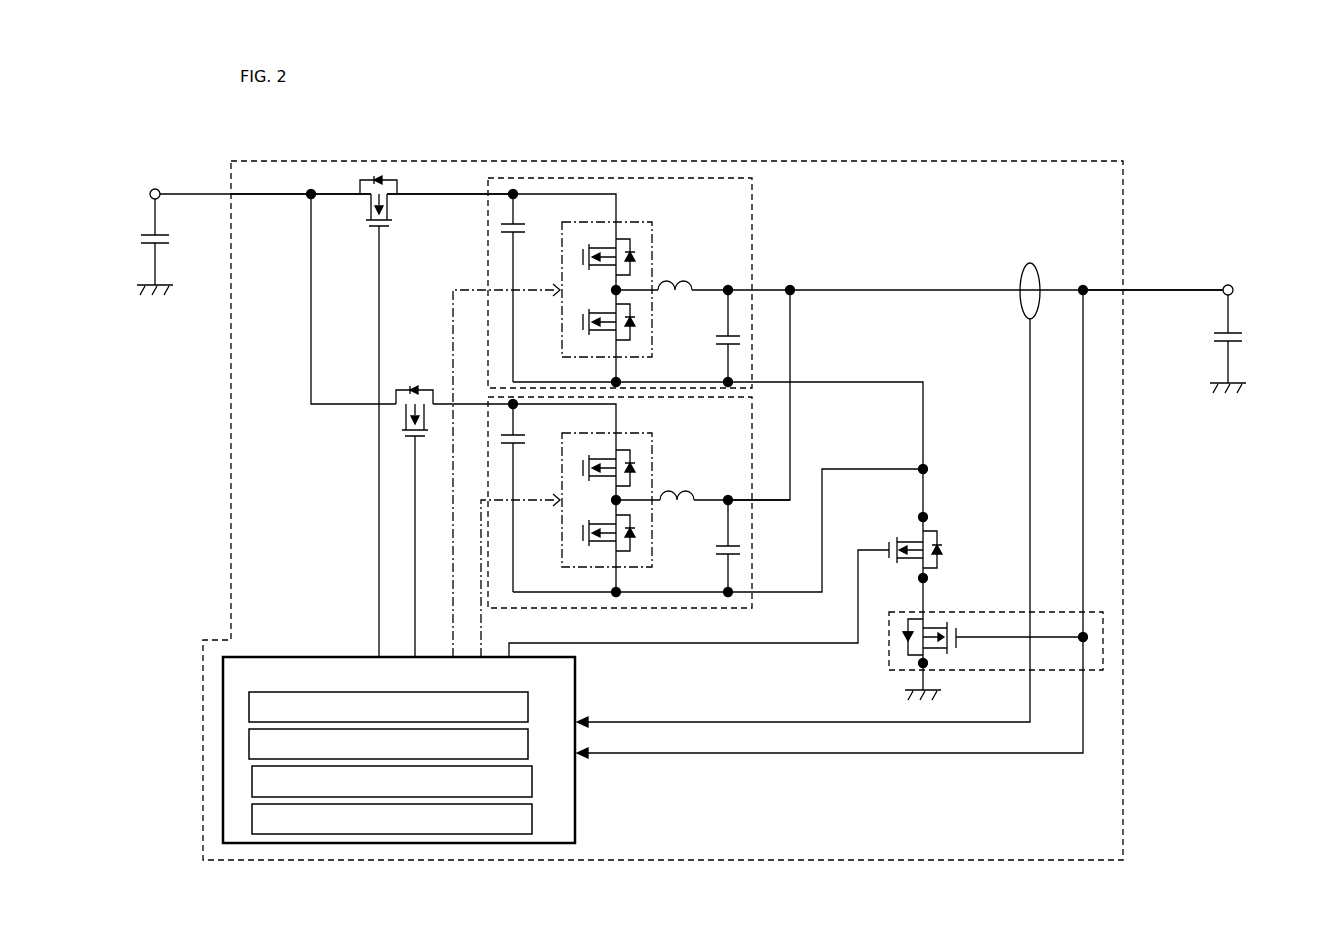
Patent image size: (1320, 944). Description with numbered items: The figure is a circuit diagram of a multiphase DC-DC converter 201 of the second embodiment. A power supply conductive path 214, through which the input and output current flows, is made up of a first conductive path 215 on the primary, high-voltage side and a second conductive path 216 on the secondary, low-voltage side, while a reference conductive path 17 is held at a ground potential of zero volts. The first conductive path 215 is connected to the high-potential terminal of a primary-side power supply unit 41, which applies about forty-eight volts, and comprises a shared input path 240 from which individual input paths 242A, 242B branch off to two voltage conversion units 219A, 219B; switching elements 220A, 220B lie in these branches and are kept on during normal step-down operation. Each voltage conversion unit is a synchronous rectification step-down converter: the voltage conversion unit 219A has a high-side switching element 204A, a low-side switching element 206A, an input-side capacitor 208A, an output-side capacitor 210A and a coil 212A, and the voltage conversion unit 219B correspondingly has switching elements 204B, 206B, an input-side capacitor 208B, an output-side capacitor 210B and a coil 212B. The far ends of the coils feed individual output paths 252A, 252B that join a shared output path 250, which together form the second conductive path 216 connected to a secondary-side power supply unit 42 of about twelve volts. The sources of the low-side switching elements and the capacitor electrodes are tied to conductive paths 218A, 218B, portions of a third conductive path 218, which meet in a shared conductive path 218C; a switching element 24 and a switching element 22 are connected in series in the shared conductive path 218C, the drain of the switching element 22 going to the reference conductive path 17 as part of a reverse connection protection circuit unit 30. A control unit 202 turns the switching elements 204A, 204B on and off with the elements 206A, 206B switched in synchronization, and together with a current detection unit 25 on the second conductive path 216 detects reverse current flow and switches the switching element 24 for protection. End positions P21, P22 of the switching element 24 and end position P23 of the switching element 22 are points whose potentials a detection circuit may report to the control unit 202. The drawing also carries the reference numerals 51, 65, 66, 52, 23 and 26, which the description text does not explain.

The DC-DC converter 201 is at (1058, 161).
The control unit 202 is at (223, 771).
The input terminal 51 is at (157, 188).
The output terminal 52 is at (1233, 287).
The input line 65 is at (200, 194).
The output line 66 is at (1135, 290).
The primary-side power supply unit 41 is at (162, 236).
The secondary-side power supply unit 42 is at (1237, 331).
The power supply conductive path 214 is at (330, 194).
The first conductive path 215 is at (372, 344).
The second conductive path 216 is at (975, 349).
The third conductive path 218 is at (882, 503).
The shared input path 240 is at (258, 194).
The individual input path 242A is at (342, 194).
The individual input path 242B is at (352, 404).
The switching element 220A is at (393, 206).
The switching element 220B is at (408, 420).
The voltage conversion unit 219A is at (655, 178).
The voltage conversion unit 219B is at (634, 608).
The switching element 204A is at (600, 248).
The switching element 204B is at (600, 459).
The switching element 206A is at (597, 333).
The switching element 206B is at (598, 543).
The input-side capacitor 208A is at (503, 232).
The input-side capacitor 208B is at (505, 443).
The output-side capacitor 210A is at (722, 336).
The output-side capacitor 210B is at (722, 547).
The coil 212A is at (680, 283).
The coil 212B is at (685, 492).
The individual output path 252A is at (790, 290).
The individual output path 252B is at (745, 500).
The shared output path 250 is at (957, 290).
The conductive path 218A is at (858, 382).
The conductive path 218B is at (782, 592).
The shared conductive path 218C is at (925, 482).
The current detection unit 25 is at (1038, 272).
The voltage detection line 26 is at (773, 722).
The switching element 24 is at (912, 538).
The switching element 22 is at (935, 652).
The gate line 23 is at (995, 637).
The reverse connection protection circuit unit 30 is at (1103, 637).
The reference conductive path 17 is at (915, 688).
The end position P21 is at (925, 515).
The end position P22 is at (920, 580).
The end position P23 is at (920, 663).